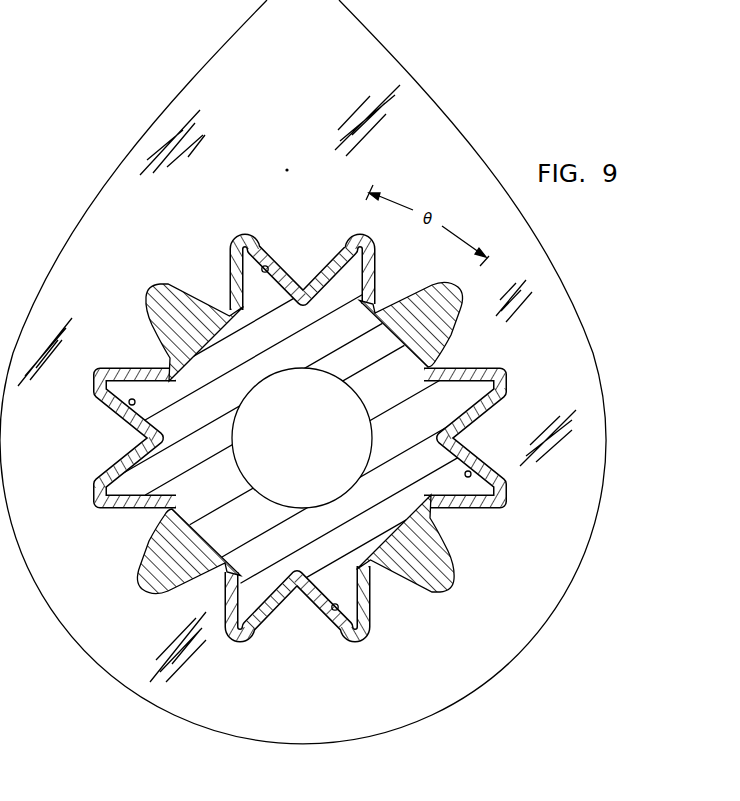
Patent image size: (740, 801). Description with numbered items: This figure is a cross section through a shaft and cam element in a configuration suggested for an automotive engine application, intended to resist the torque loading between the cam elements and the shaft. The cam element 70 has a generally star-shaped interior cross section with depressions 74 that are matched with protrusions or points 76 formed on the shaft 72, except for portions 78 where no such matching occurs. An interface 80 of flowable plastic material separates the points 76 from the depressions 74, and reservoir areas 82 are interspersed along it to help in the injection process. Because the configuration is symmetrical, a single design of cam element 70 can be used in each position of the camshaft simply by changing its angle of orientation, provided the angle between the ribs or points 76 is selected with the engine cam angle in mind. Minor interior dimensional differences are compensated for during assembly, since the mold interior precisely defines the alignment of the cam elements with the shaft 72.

The cam element 70 is at (415, 75).
The shaft 72 is at (248, 404).
The depressions 74 is at (158, 283).
The protrusions or points 76 is at (273, 266).
The portions 78 is at (432, 348).
The interface 80 is at (106, 370).
The reservoir areas 82 is at (185, 305).